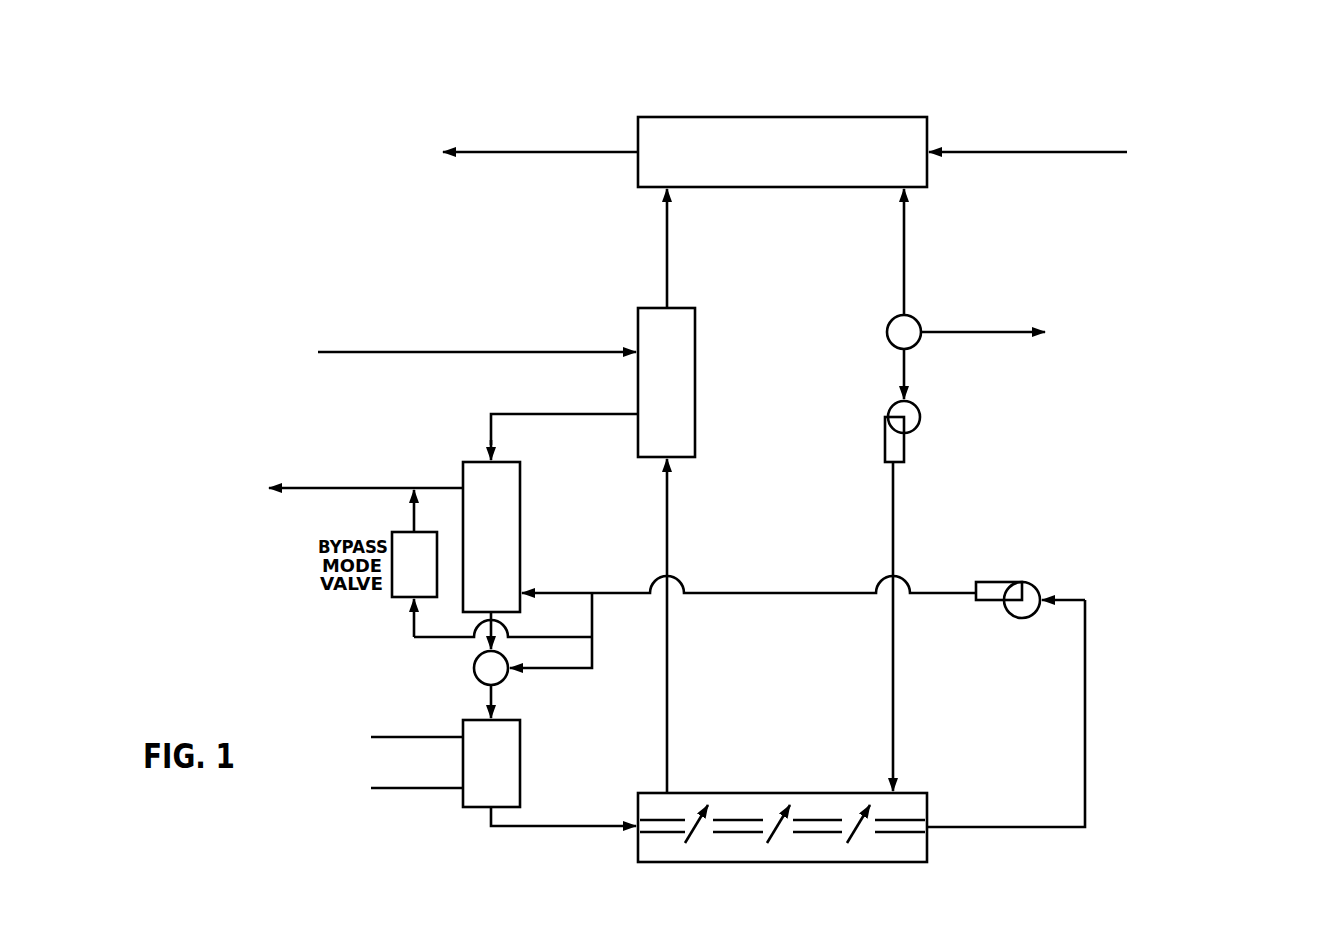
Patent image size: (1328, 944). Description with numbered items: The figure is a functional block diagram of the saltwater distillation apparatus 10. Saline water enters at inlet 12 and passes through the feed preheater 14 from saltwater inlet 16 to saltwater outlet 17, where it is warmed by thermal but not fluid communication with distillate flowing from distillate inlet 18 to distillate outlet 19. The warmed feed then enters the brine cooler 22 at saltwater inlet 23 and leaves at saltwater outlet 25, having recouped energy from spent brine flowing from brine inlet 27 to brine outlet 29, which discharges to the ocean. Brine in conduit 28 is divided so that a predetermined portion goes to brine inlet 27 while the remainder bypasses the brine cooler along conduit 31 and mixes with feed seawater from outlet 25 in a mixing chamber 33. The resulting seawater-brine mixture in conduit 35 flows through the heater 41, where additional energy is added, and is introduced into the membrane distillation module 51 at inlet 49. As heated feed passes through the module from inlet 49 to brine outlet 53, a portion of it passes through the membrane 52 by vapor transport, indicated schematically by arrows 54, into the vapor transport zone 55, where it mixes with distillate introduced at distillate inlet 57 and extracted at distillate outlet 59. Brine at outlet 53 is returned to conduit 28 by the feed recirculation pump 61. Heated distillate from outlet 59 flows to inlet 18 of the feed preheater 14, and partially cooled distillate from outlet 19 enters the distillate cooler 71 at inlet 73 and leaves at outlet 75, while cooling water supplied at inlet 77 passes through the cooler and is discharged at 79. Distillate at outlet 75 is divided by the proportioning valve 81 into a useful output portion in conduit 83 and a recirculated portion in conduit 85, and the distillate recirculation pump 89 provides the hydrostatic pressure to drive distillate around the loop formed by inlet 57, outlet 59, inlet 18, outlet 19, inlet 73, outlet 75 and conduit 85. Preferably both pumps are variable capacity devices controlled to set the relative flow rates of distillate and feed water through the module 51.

The saltwater distillation apparatus 10 is at (966, 93).
The saltwater inlet 12 is at (338, 352).
The feed preheater 14 is at (697, 333).
The preheater saltwater inlet 16 is at (611, 350).
The preheater saltwater outlet 17 is at (628, 414).
The preheater distillate inlet 18 is at (669, 462).
The preheater distillate outlet 19 is at (669, 305).
The brine cooler 22 is at (522, 487).
The brine cooler saltwater inlet 23 is at (496, 462).
The brine cooler saltwater outlet 25 is at (477, 652).
The brine inlet 27 is at (553, 593).
The brine conduit 28 is at (617, 593).
The brine outlet 29 is at (448, 488).
The bypass conduit 31 is at (572, 668).
The mixing chamber 33 is at (477, 680).
The feedwater conduit 35 is at (498, 700).
The heater 41 is at (522, 766).
The MD module feed inlet 49 is at (562, 826).
The membrane distillation module 51 is at (803, 793).
The membrane 52 is at (672, 835).
The MD module brine outlet 53 is at (970, 827).
The vapor transport arrows 54 is at (688, 840).
The vapor transport zone 55 is at (744, 815).
The distillate inlet 57 is at (891, 790).
The distillate outlet 59 is at (669, 715).
The feed recirculation pump 61 is at (1012, 615).
The distillate cooler 71 is at (783, 117).
The distillate cooler inlet 73 is at (667, 205).
The distillate cooler outlet 75 is at (906, 232).
The cooling water inlet 77 is at (1027, 152).
The cooling water discharge 79 is at (527, 152).
The proportioning valve 81 is at (910, 318).
The distillate output conduit 83 is at (970, 332).
The distillate recirculation conduit 85 is at (906, 372).
The distillate recirculation pump 89 is at (888, 425).